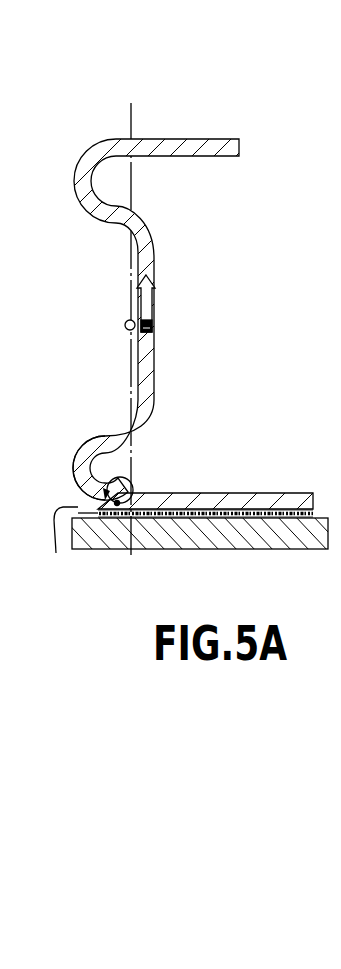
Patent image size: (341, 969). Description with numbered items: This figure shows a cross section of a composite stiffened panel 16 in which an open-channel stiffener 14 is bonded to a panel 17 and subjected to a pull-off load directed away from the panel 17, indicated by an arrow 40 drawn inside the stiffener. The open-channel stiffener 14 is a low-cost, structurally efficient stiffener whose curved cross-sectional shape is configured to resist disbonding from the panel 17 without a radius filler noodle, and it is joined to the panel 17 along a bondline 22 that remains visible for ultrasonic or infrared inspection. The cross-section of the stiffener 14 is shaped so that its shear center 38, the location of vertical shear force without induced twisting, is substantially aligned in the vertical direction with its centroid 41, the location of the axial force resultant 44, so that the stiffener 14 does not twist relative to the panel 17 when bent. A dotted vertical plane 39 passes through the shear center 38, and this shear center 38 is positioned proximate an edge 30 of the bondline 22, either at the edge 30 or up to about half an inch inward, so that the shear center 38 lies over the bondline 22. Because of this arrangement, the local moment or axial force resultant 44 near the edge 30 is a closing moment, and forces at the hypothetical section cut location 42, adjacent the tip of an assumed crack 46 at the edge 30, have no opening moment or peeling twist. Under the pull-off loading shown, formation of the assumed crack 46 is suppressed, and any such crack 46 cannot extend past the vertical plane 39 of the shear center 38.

The open-channel stiffener 14 is at (93, 220).
The composite stiffened panel 16 is at (247, 220).
The panel 17 is at (267, 535).
The bondline 22 is at (315, 515).
The edge of the bondline 30 is at (78, 503).
The shear center 38 is at (125, 325).
The vertical plane of the shear center 39 is at (132, 113).
The displacement arrow 40 is at (155, 297).
The centroid 41 is at (153, 325).
The section cut location 42 is at (118, 502).
The axial force resultant 44 is at (118, 430).
The assumed crack 46 is at (63, 555).